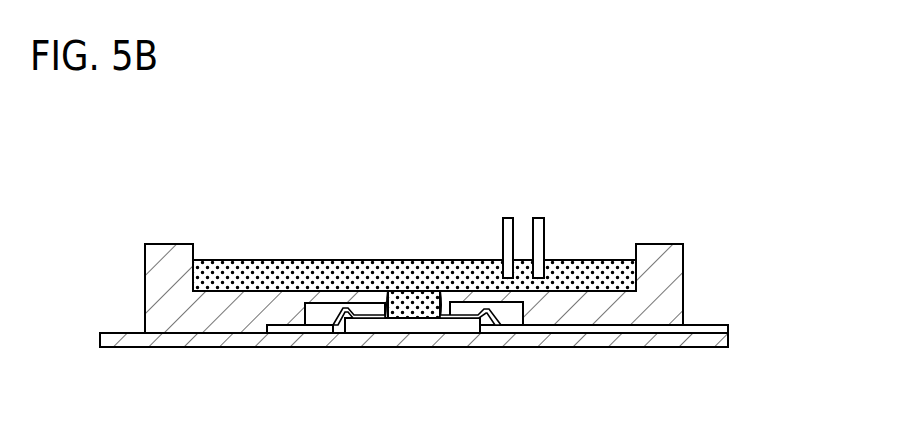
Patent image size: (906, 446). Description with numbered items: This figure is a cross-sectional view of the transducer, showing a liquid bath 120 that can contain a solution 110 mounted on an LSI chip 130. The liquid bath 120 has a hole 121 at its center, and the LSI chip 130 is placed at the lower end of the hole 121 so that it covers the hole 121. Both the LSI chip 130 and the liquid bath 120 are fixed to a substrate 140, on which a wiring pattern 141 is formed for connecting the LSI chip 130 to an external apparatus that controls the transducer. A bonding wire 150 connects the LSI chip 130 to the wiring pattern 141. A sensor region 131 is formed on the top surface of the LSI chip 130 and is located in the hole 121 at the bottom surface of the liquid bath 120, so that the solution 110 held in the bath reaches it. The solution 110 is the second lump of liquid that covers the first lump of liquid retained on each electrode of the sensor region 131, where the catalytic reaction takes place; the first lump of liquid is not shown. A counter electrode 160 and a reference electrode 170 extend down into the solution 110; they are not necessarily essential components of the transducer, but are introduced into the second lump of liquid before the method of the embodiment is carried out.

The solution 110 is at (262, 275).
The liquid bath 120 is at (172, 243).
The hole 121 is at (438, 314).
The LSI chip 130 is at (428, 333).
The sensor region 131 is at (407, 313).
The substrate 140 is at (172, 346).
The wiring pattern 141 is at (712, 324).
The bonding wire 150 is at (514, 327).
The counter electrode 160 is at (503, 240).
The reference electrode 170 is at (546, 240).